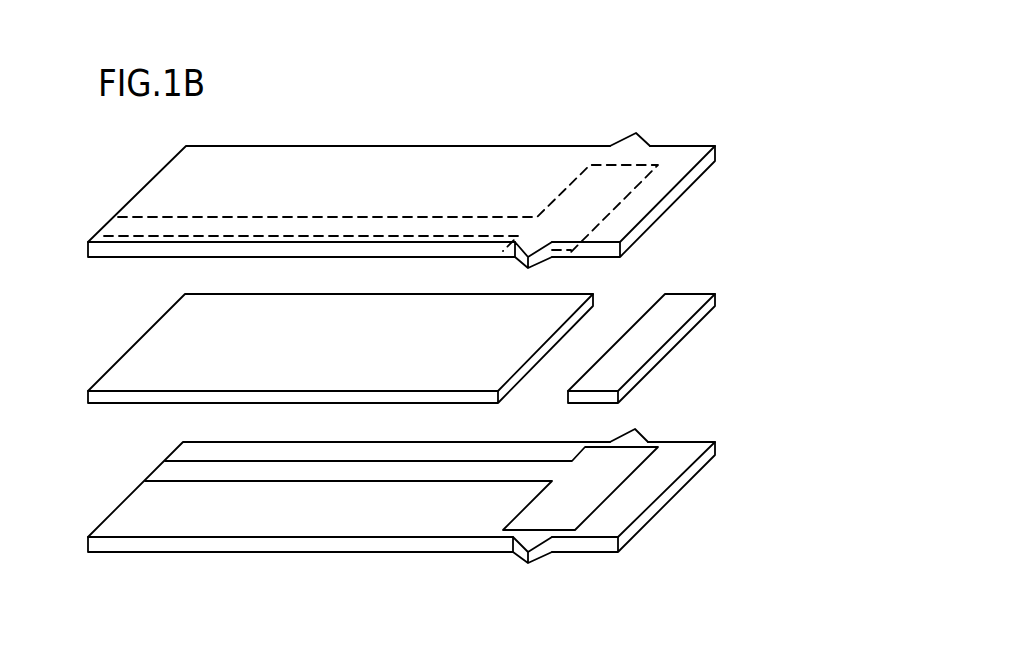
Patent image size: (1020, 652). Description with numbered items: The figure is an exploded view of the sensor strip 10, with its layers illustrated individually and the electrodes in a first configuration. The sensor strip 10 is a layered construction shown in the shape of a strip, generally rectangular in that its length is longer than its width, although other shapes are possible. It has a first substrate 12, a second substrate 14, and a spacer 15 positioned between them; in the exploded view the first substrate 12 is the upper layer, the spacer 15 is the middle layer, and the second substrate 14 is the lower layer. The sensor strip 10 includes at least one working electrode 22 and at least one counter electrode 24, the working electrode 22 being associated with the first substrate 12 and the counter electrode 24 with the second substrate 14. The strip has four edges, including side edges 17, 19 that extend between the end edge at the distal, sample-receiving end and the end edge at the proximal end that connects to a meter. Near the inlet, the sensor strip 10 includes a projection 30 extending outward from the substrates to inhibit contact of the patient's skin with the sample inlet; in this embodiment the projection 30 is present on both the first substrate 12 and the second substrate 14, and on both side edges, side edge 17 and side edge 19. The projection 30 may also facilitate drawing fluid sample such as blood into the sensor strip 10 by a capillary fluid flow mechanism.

The sensor strip 10 is at (690, 80).
The first substrate 12 is at (153, 177).
The second substrate 14 is at (122, 507).
The spacer 15 is at (119, 362).
The side edge 17 is at (283, 257).
The side edge 19 is at (332, 442).
The working electrode 22 is at (415, 215).
The counter electrode 24 is at (216, 460).
The projection 30 is at (624, 139).